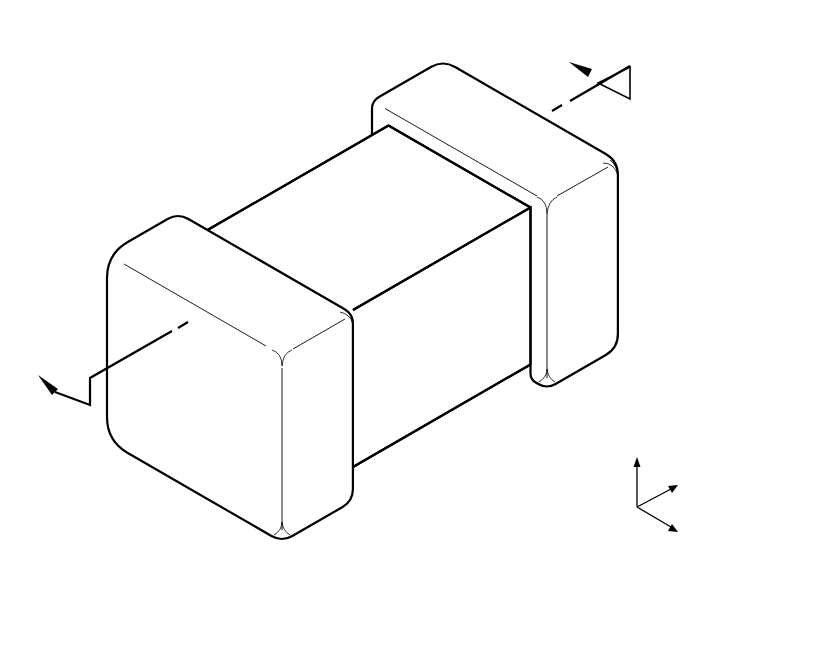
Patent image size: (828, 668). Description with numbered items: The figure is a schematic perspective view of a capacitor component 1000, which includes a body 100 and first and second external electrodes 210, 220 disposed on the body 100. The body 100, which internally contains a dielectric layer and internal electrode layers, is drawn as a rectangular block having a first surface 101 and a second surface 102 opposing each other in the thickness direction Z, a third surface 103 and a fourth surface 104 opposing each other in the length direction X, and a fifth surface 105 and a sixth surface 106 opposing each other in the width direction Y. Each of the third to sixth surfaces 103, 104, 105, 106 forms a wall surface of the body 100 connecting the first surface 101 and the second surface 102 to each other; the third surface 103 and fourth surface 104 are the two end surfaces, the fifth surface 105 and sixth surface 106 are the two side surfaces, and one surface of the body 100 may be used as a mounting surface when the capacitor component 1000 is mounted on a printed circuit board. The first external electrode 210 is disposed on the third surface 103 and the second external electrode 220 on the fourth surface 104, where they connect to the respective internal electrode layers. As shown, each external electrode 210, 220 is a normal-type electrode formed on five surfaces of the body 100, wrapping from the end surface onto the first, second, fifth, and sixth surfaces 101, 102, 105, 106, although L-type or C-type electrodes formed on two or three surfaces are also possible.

The capacitor component 1000 is at (102, 40).
The body 100 is at (366, 138).
The first surface 101 is at (405, 387).
The second surface 102 is at (317, 197).
The third surface 103 is at (198, 447).
The fourth surface 104 is at (568, 243).
The fifth surface 105 is at (448, 363).
The sixth surface 106 is at (298, 227).
The first external electrode 210 is at (165, 249).
The second external electrode 220 is at (424, 100).